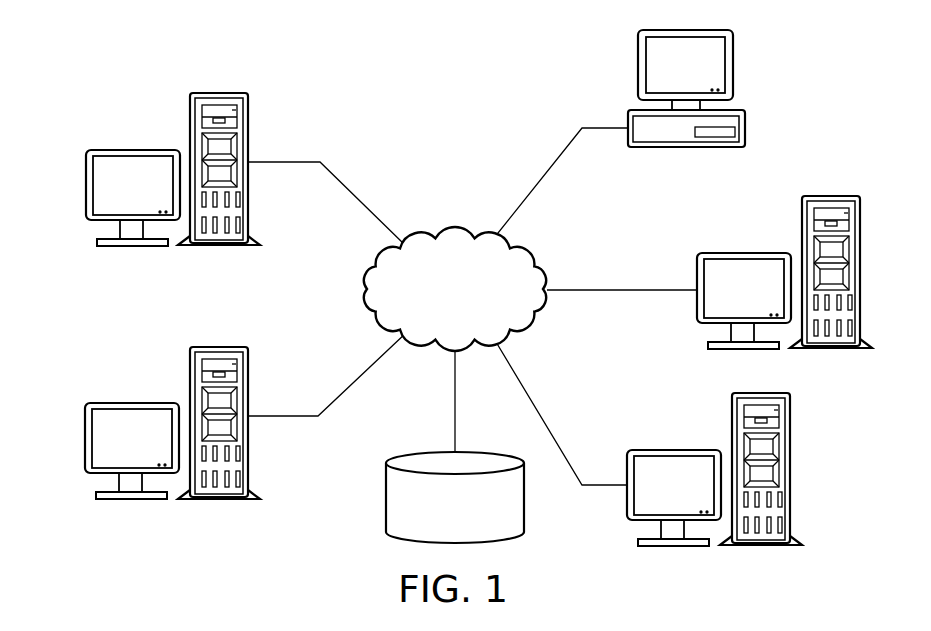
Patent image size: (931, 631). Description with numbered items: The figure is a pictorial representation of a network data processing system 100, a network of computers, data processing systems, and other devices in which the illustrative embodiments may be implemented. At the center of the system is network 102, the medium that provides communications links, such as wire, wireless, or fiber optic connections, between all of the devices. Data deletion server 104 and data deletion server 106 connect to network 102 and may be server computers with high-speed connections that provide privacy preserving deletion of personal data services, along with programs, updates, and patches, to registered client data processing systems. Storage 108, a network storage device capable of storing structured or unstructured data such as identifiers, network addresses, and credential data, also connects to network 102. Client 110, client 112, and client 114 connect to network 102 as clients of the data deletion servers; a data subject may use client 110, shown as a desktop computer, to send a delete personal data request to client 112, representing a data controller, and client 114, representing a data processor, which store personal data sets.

The network data processing system 100 is at (318, 70).
The network 102 is at (430, 238).
The data deletion server 104 is at (86, 185).
The data deletion server 106 is at (85, 437).
The storage 108 is at (386, 497).
The client 110 is at (745, 120).
The client 112 is at (860, 243).
The client 114 is at (790, 503).